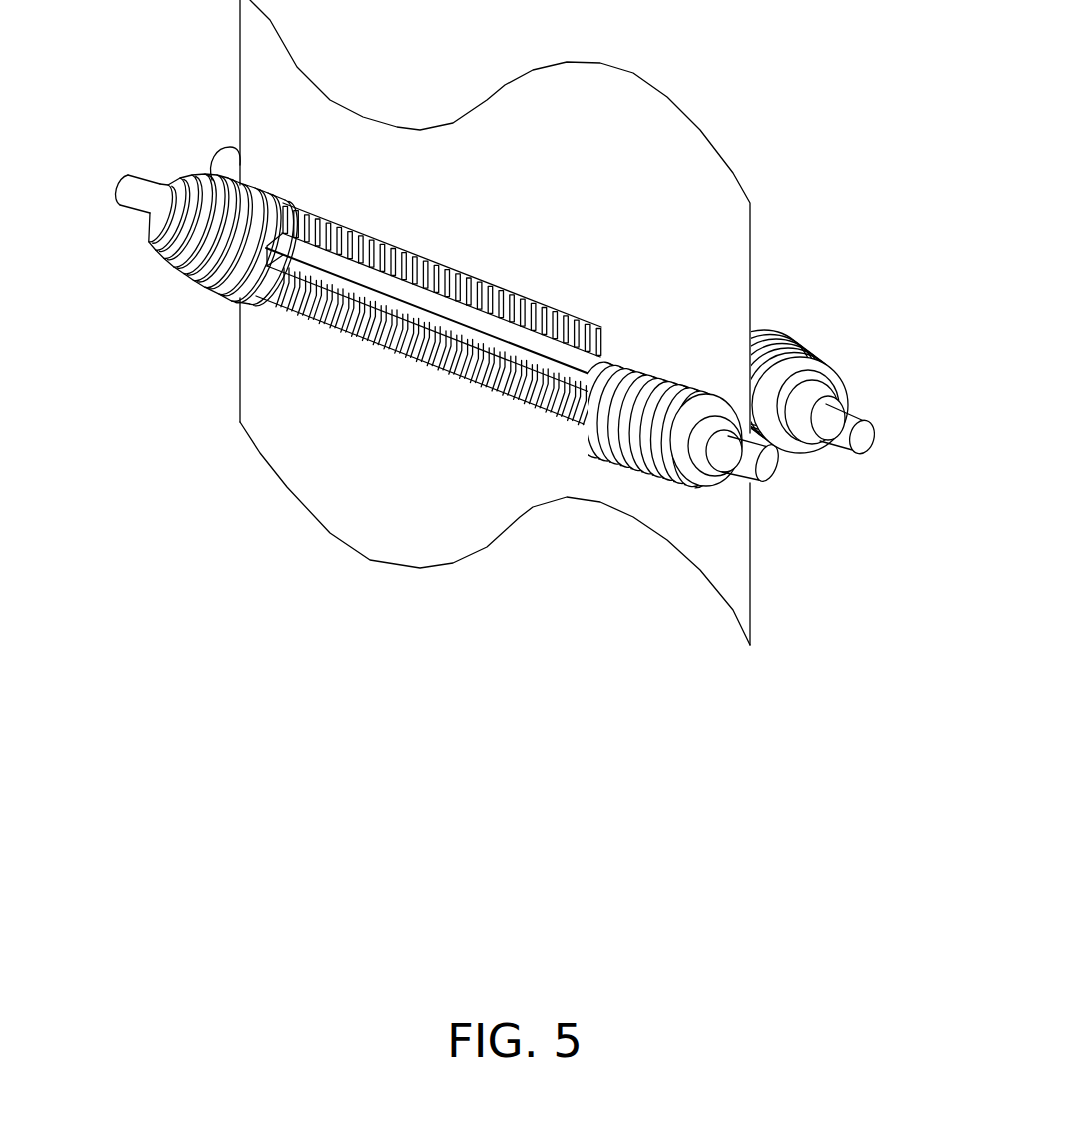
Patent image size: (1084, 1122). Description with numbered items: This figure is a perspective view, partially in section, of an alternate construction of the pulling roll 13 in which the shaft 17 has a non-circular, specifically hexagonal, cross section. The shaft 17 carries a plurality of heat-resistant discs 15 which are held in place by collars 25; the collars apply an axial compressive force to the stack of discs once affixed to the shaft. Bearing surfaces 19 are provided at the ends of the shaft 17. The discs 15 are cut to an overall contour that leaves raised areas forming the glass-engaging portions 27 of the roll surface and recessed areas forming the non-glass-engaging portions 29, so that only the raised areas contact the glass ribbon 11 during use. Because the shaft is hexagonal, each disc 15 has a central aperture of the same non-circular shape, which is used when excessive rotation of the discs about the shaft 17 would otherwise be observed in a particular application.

The glass ribbon 11 is at (636, 138).
The pulling roll 13 is at (158, 310).
The disc 15 is at (503, 380).
The shaft 17 is at (425, 312).
The bearing surface 19 is at (810, 403).
The outer collar 25 is at (803, 372).
The glass-engaging portions of roll surface 27 is at (277, 192).
The non-glass-engaging portions of roll surface 29 is at (466, 280).